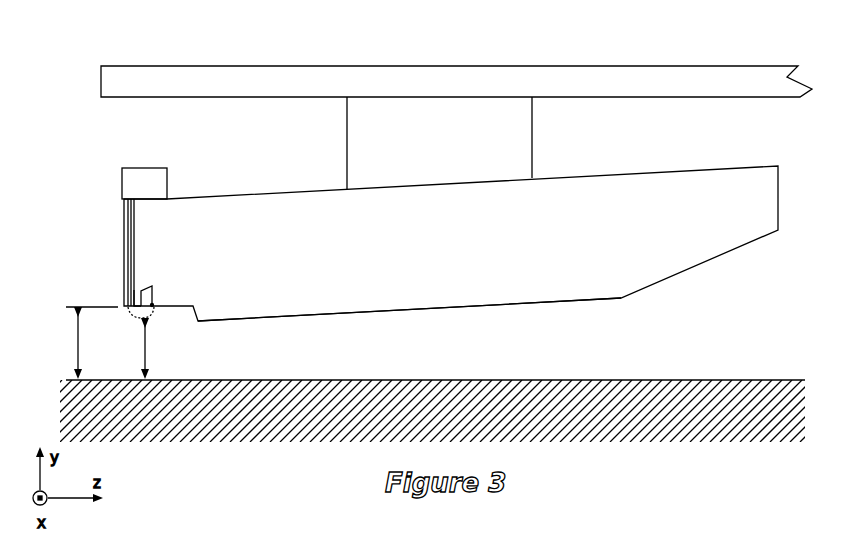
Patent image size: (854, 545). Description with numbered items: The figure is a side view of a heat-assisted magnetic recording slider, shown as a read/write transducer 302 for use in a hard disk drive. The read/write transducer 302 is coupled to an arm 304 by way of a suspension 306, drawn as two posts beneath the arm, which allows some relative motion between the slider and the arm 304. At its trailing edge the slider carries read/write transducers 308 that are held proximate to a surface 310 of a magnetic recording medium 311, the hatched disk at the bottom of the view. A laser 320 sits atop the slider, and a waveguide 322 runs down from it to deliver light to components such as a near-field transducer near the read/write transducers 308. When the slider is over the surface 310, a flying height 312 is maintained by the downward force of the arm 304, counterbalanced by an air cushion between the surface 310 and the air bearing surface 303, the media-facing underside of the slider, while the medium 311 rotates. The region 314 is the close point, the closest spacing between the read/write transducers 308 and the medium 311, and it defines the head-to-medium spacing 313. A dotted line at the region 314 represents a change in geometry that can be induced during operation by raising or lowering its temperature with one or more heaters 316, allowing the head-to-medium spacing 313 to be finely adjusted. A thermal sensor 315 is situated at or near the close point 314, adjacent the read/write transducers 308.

The read/write transducer 302 is at (668, 181).
The air bearing surface 303 is at (300, 321).
The arm 304 is at (723, 73).
The suspension 306 is at (532, 134).
The read/write transducers 308 is at (137, 298).
The surface 310 is at (690, 380).
The magnetic recording medium 311 is at (683, 427).
The flying height 312 is at (76, 340).
The head-to-medium spacing 313 is at (125, 348).
The close point region 314 is at (150, 318).
The thermal sensor 315 is at (154, 304).
The heaters 316 is at (152, 287).
The laser 320 is at (147, 181).
The waveguide 322 is at (127, 231).